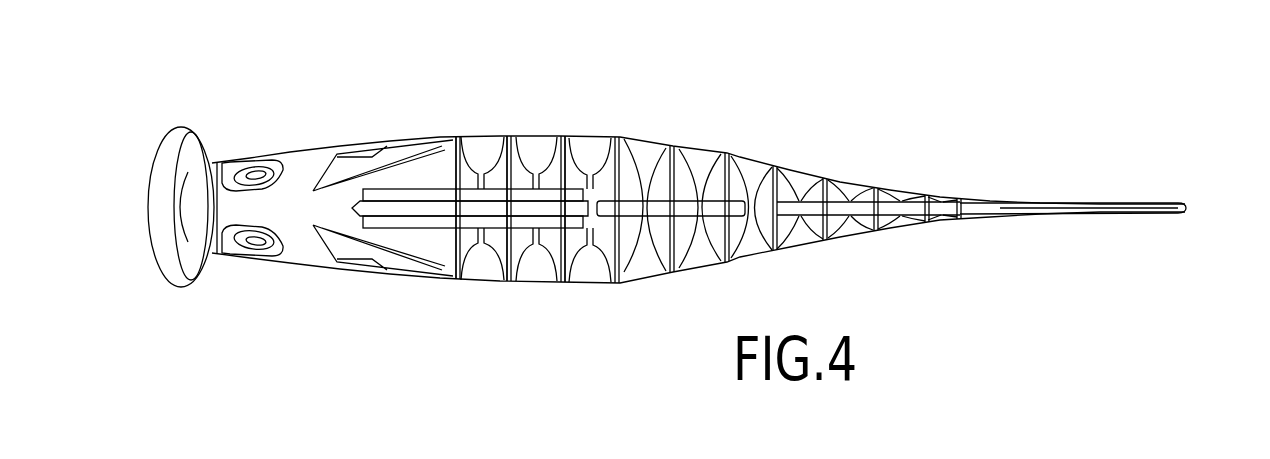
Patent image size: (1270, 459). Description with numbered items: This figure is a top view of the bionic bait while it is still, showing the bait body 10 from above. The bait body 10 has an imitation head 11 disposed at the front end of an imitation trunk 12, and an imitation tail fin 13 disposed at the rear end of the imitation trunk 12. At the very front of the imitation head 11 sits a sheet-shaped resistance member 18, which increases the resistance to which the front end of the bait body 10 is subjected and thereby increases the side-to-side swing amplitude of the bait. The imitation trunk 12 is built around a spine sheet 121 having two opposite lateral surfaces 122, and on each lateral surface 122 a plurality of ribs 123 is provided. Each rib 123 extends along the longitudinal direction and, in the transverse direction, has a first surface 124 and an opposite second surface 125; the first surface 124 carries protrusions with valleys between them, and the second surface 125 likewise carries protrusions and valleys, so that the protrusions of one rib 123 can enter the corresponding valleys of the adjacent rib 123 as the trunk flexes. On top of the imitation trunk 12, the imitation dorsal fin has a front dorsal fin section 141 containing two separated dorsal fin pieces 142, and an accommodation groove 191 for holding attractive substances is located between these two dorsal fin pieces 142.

The bait body 10 is at (982, 63).
The imitation head 11 is at (259, 146).
The imitation trunk 12 is at (702, 144).
The imitation tail fin 13 is at (1110, 197).
The resistance member 18 is at (166, 158).
The spine sheet 121 is at (769, 205).
The lateral surface 122 is at (816, 187).
The rib 123 is at (585, 142).
The first surface 124 is at (500, 140).
The second surface 125 is at (553, 142).
The front dorsal fin section 141 is at (467, 82).
The dorsal fin piece 142 is at (388, 222).
The accommodation groove 191 is at (417, 210).